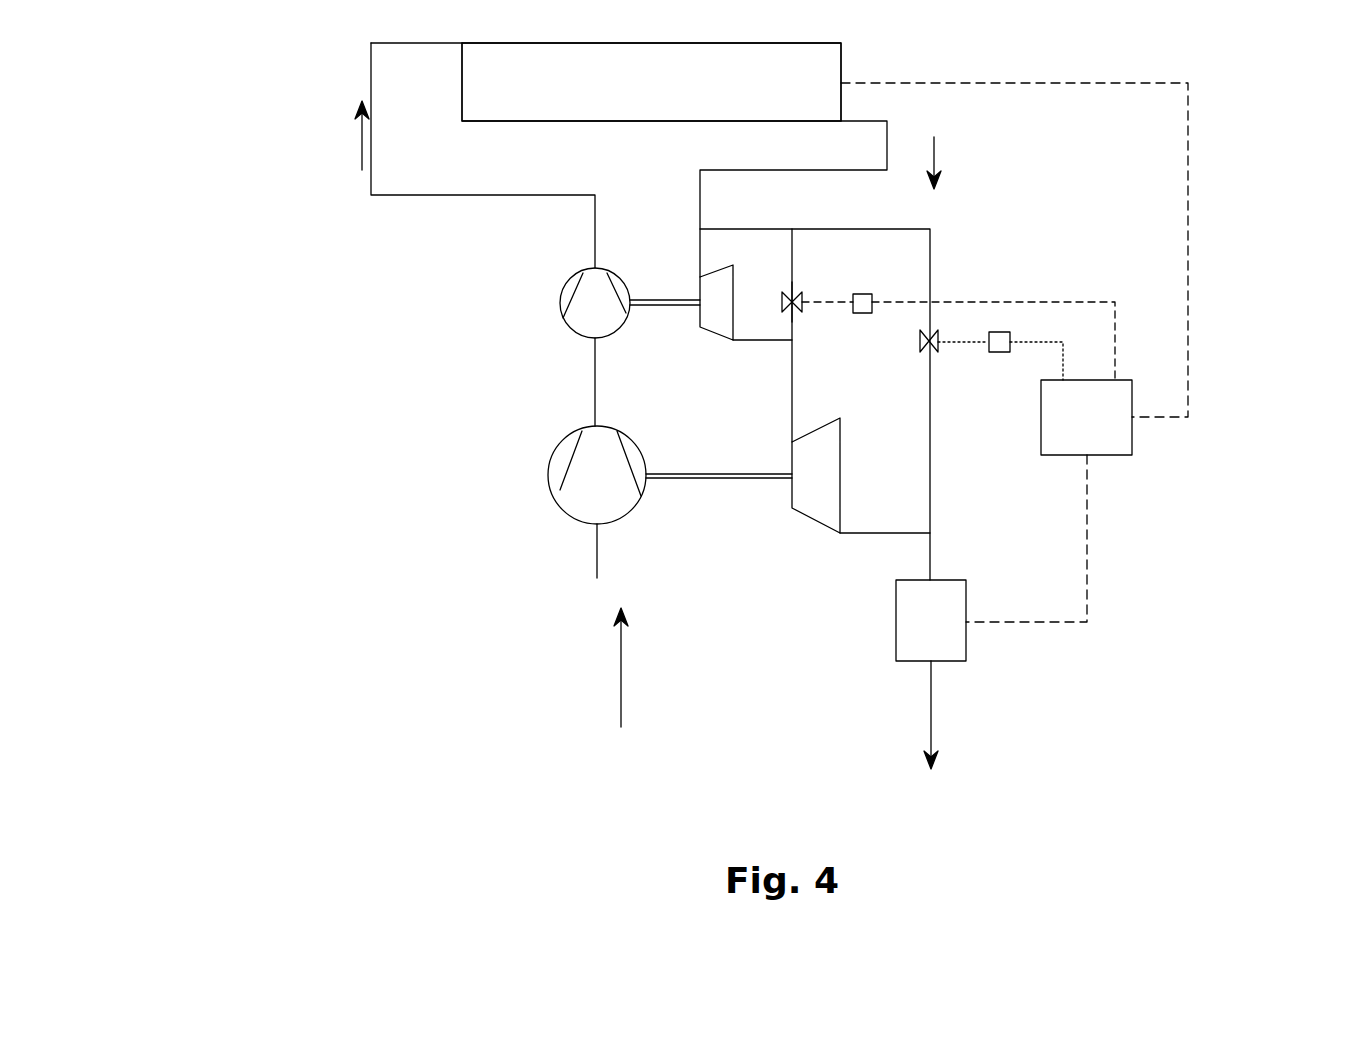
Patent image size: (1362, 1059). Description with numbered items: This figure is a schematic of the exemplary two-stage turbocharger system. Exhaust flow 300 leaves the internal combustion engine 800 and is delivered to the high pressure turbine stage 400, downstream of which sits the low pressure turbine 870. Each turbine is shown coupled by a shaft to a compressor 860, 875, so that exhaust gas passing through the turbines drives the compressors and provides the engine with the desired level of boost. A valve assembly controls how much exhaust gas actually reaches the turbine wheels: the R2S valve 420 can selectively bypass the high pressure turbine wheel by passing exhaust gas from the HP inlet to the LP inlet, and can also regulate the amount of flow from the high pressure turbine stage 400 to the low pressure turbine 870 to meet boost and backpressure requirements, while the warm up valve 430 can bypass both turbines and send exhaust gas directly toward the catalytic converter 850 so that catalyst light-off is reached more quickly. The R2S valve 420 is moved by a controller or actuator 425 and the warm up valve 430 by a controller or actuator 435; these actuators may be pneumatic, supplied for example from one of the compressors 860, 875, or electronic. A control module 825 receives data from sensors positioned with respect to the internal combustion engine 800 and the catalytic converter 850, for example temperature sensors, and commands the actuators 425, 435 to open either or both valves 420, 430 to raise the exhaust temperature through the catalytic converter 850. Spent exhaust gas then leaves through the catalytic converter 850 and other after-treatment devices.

The internal combustion engine 800 is at (830, 93).
The exhaust flow 300 is at (934, 162).
The R2S valve 420 is at (803, 302).
The controller or actuator 425 is at (871, 296).
The warm up valve 430 is at (937, 332).
The controller or actuator 435 is at (998, 332).
The control module 825 is at (1088, 437).
The catalytic converter 850 is at (940, 608).
The compressor 860 is at (617, 317).
The high pressure turbine stage 400 is at (728, 306).
The compressor 875 is at (618, 462).
The low pressure turbine 870 is at (825, 470).